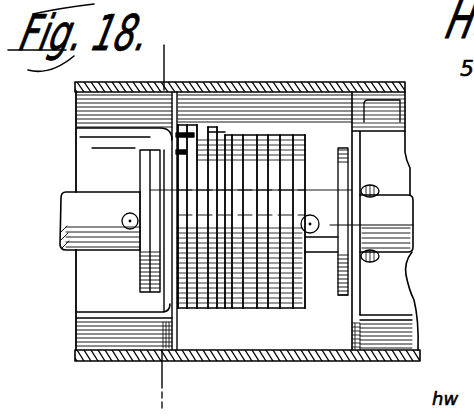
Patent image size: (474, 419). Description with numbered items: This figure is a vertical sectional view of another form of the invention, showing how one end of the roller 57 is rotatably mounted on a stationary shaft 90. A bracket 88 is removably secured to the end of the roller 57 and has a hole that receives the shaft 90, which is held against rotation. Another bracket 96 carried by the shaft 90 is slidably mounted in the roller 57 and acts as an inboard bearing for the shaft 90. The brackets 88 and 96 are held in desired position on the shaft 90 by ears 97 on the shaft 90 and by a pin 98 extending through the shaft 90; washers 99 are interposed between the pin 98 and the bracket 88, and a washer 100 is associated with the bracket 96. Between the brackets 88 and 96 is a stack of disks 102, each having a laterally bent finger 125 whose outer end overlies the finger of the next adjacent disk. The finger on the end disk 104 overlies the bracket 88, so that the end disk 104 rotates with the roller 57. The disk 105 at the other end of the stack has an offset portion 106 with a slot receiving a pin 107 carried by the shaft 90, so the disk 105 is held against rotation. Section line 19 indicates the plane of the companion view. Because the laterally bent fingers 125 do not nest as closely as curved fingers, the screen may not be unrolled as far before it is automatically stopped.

The section line 19 is at (180, 58).
The bracket 88 is at (158, 108).
The roller 57 is at (250, 90).
The laterally bent fingers 125 is at (215, 126).
The bracket 96 is at (376, 112).
The pin 98 is at (130, 213).
The washers 99 is at (140, 278).
The ears 97 is at (380, 188).
The shaft 90 is at (403, 207).
The pin 107 is at (408, 232).
The offset portion 106 is at (307, 265).
The end disk 104 is at (180, 310).
The disks 102 is at (228, 310).
The disk 105 is at (297, 310).
The washer 100 is at (347, 297).